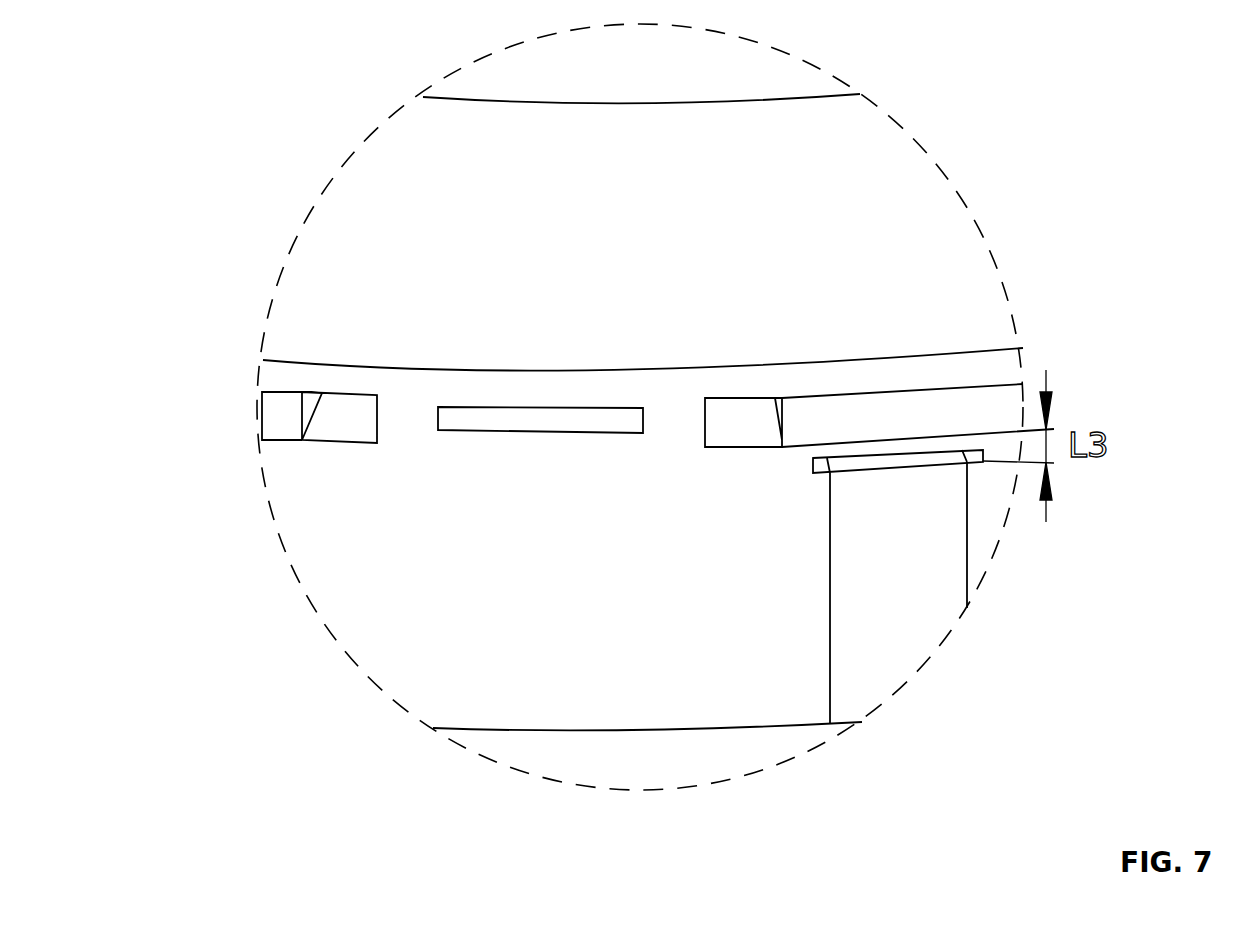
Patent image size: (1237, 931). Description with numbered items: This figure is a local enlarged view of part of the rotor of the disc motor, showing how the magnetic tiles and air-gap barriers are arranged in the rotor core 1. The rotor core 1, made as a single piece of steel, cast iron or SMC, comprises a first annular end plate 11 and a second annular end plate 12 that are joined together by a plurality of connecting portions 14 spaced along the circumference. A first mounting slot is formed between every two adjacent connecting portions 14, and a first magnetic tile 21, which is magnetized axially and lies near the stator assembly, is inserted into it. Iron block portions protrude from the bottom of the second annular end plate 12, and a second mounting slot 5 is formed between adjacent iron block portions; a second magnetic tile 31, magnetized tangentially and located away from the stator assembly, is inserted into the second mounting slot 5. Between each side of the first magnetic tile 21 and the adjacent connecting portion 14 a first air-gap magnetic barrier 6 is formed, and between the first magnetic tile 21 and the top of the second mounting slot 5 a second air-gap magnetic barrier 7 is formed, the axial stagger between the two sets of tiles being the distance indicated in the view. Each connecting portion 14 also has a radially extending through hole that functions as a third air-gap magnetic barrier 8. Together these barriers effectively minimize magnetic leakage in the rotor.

The rotor core 1 is at (618, 657).
The second mounting slot 5 is at (832, 600).
The first air-gap magnetic barrier 6 is at (338, 415).
The second air-gap magnetic barrier 7 is at (855, 448).
The third air-gap magnetic barrier 8 is at (535, 423).
The first annular end plate 11 is at (382, 330).
The second annular end plate 12 is at (930, 458).
The connecting portion 14 is at (412, 420).
The first magnetic tile 21 is at (282, 410).
The second magnetic tile 31 is at (888, 572).